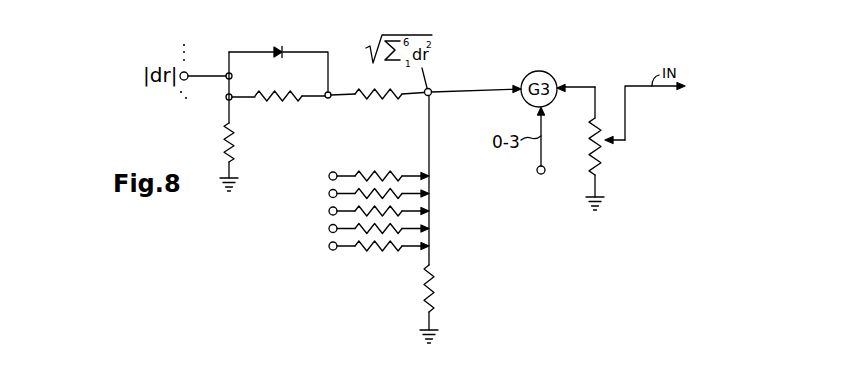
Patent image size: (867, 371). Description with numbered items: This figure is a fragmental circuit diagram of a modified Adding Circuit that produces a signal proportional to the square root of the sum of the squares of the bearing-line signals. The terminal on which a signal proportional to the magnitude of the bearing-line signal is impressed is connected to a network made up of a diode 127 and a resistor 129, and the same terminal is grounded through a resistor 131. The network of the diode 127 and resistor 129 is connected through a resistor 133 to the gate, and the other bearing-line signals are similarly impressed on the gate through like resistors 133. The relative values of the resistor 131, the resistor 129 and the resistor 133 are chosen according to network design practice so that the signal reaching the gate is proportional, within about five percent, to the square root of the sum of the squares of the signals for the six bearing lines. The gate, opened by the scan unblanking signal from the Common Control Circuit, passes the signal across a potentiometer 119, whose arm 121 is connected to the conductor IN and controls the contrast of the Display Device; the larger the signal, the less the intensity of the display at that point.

The diode 127 is at (276, 47).
The resistor 129 is at (290, 92).
The resistor 131 is at (238, 139).
The resistor 133 is at (380, 98).
The arm of the potentiometer 121 is at (610, 142).
The potentiometer 119 is at (604, 160).